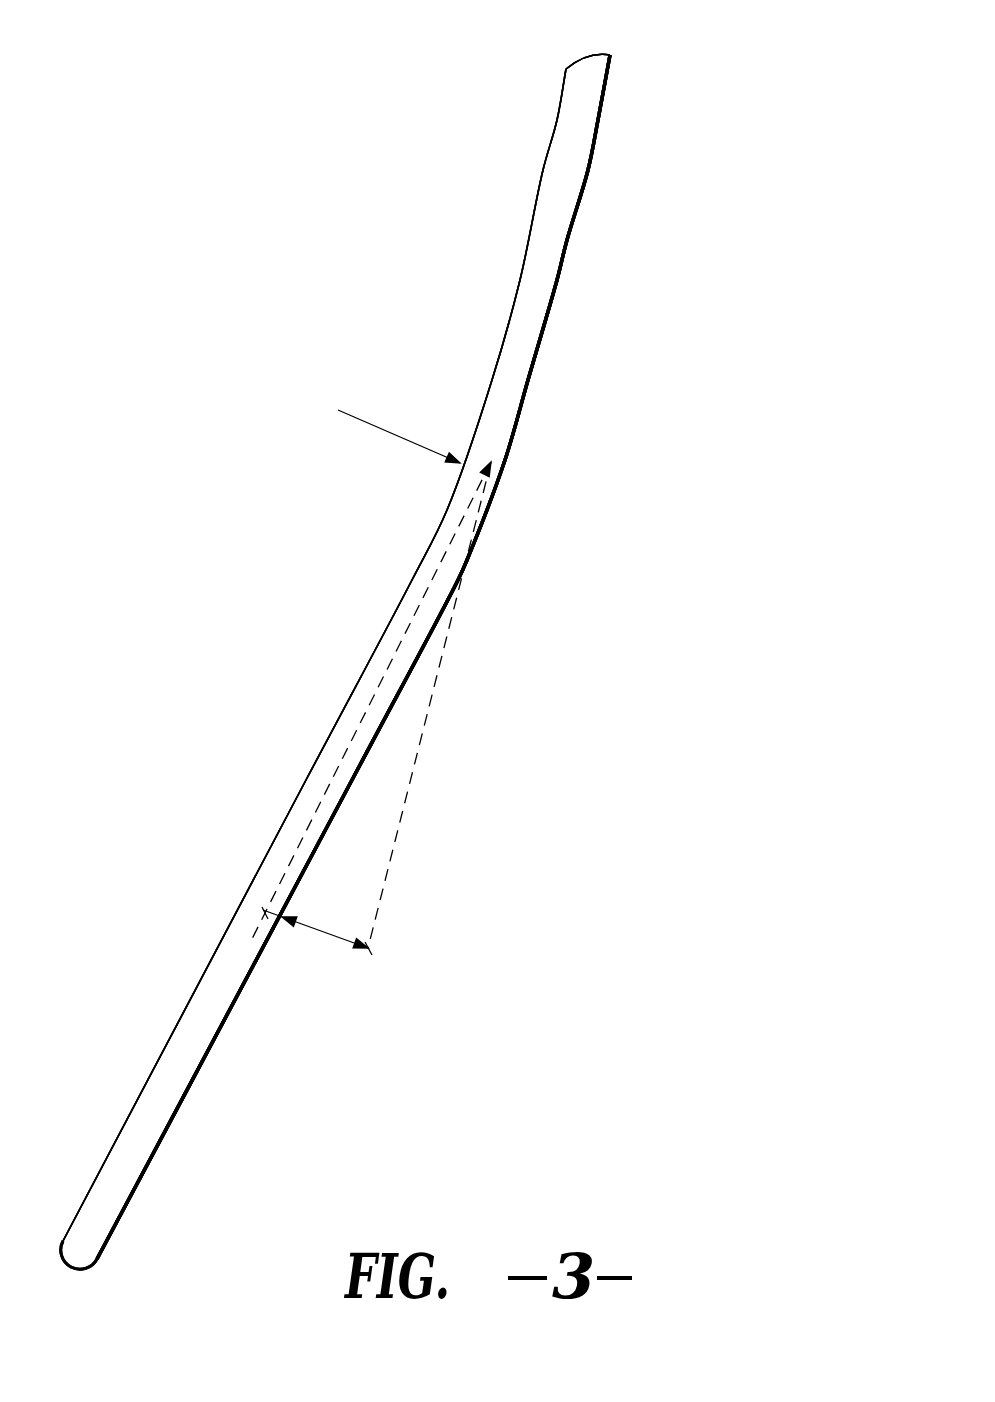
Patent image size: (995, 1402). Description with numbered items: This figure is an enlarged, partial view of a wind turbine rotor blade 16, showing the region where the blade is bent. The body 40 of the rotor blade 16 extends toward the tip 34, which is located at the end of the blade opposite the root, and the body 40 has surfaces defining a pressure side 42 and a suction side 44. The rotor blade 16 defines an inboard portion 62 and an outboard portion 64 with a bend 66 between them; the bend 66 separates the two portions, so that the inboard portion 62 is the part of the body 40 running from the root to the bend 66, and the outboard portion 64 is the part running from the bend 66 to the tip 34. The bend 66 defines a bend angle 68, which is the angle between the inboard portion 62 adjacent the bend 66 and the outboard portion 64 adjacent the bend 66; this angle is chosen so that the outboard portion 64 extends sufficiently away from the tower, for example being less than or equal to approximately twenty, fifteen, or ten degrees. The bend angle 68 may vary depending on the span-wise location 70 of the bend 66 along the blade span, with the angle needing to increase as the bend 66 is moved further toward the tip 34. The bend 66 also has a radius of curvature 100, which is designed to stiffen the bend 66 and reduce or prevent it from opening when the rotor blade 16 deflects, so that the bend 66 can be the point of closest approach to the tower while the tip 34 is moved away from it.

The rotor blade 16 is at (335, 661).
The tip 34 is at (63, 1277).
The body 40 is at (543, 245).
The pressure side 42 is at (545, 118).
The suction side 44 is at (622, 102).
The inboard portion 62 is at (598, 187).
The outboard portion 64 is at (190, 1113).
The bend 66 is at (505, 465).
The bend angle 68 is at (312, 933).
The span-wise location 70 is at (433, 475).
The radius of curvature 100 is at (373, 422).